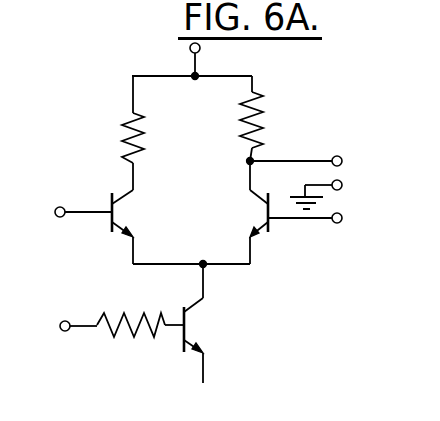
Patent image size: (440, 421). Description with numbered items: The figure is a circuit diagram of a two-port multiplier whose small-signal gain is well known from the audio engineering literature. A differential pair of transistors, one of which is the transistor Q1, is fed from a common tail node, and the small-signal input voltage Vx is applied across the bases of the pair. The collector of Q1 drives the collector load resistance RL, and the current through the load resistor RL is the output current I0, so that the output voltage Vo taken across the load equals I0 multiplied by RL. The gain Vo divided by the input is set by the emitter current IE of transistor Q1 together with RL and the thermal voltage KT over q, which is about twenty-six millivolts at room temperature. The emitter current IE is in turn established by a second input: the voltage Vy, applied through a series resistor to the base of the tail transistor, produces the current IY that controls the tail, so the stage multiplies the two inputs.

The input voltage Vx is at (85, 179).
The collector load resistance RL is at (267, 118).
The current through the load resistor I0 is at (225, 150).
The transistor Q1 is at (247, 211).
The output voltage Vo is at (355, 197).
The emitter current IE is at (220, 280).
The Y input terminal and resistor Vy is at (118, 341).
The Y input current IY is at (160, 352).